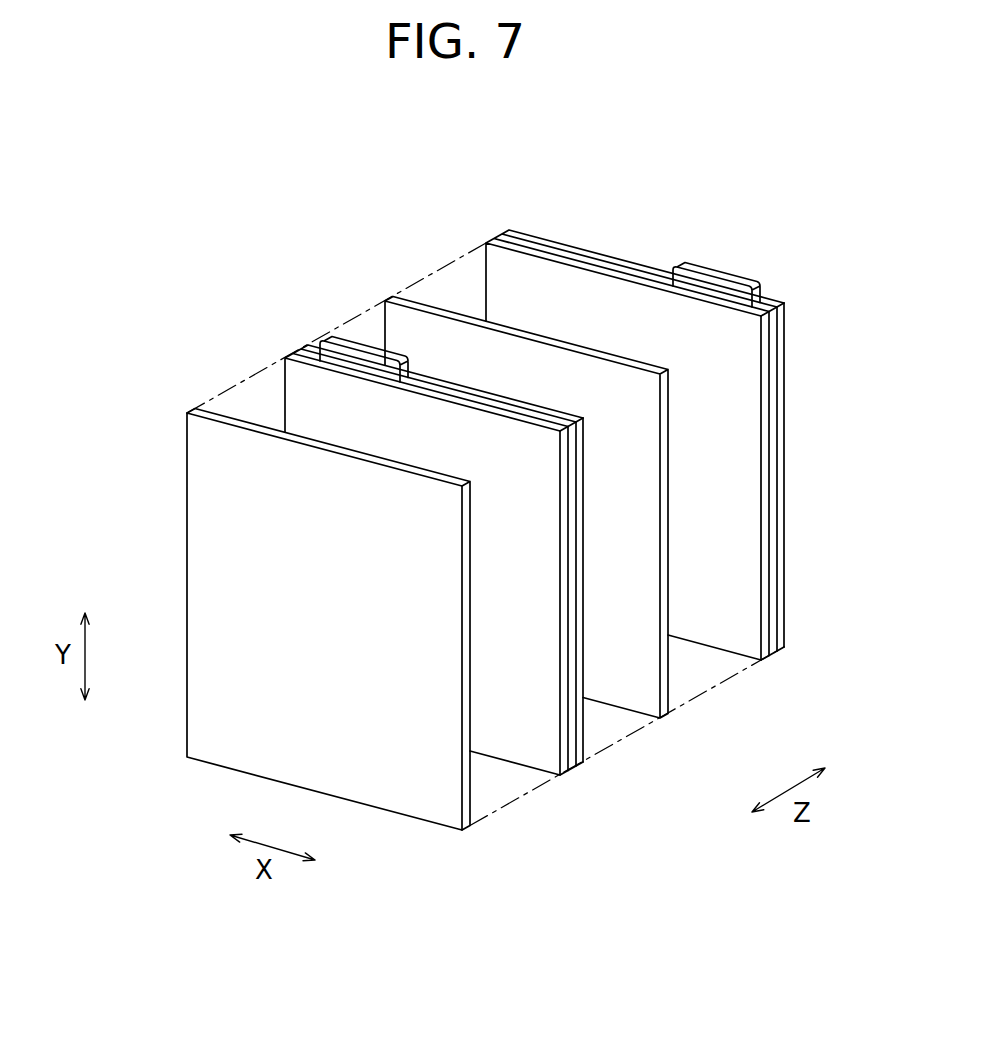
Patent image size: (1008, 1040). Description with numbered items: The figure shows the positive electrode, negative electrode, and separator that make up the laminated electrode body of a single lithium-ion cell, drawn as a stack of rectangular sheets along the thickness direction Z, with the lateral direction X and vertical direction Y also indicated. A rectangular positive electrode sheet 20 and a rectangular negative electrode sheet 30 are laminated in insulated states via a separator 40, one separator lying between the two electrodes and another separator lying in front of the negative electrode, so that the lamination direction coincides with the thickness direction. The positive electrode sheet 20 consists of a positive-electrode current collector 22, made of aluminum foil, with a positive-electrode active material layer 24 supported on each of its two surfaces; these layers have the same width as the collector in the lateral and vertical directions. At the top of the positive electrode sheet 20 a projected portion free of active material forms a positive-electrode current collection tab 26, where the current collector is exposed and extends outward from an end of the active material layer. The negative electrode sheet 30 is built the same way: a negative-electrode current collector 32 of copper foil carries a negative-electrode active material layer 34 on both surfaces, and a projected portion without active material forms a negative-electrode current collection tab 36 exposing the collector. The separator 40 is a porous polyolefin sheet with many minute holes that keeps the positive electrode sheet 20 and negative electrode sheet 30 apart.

The positive electrode sheet 20 is at (650, 450).
The positive-electrode current collector 22 is at (772, 656).
The positive-electrode active material layer 24 is at (782, 621).
The positive-electrode current collection tab 26 is at (750, 267).
The negative electrode sheet 30 is at (451, 554).
The negative-electrode current collector 32 is at (573, 770).
The negative-electrode active material layer 34 is at (538, 741).
The negative-electrode current collection tab 36 is at (353, 332).
The separator 40 is at (178, 492).